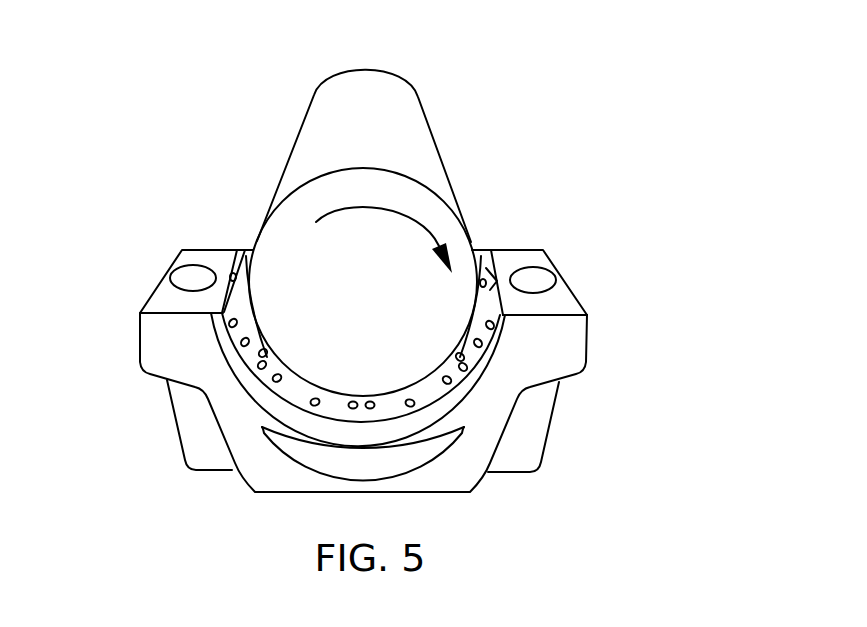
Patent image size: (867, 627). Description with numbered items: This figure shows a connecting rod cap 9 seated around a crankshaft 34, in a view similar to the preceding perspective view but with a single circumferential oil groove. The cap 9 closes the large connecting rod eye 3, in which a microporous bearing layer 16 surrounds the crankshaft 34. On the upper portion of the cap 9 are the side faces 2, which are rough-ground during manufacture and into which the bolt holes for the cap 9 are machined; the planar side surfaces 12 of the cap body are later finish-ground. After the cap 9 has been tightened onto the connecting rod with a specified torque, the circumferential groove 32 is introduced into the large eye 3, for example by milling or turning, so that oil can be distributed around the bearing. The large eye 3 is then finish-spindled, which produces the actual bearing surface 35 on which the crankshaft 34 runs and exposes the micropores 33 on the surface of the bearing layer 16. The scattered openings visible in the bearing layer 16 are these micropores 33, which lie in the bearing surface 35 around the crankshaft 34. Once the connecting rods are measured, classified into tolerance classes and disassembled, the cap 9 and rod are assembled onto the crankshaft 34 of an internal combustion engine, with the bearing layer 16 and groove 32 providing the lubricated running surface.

The side faces 2 is at (570, 290).
The large connecting rod eye 3 is at (222, 258).
The connecting rod cap 9 is at (123, 409).
The planar side surfaces 12 is at (560, 338).
The bearing layer 16 is at (485, 266).
The circumferential groove 32 is at (228, 283).
The micropores 33 is at (478, 343).
The crankshaft 34 is at (393, 109).
The bearing surface 35 is at (488, 337).